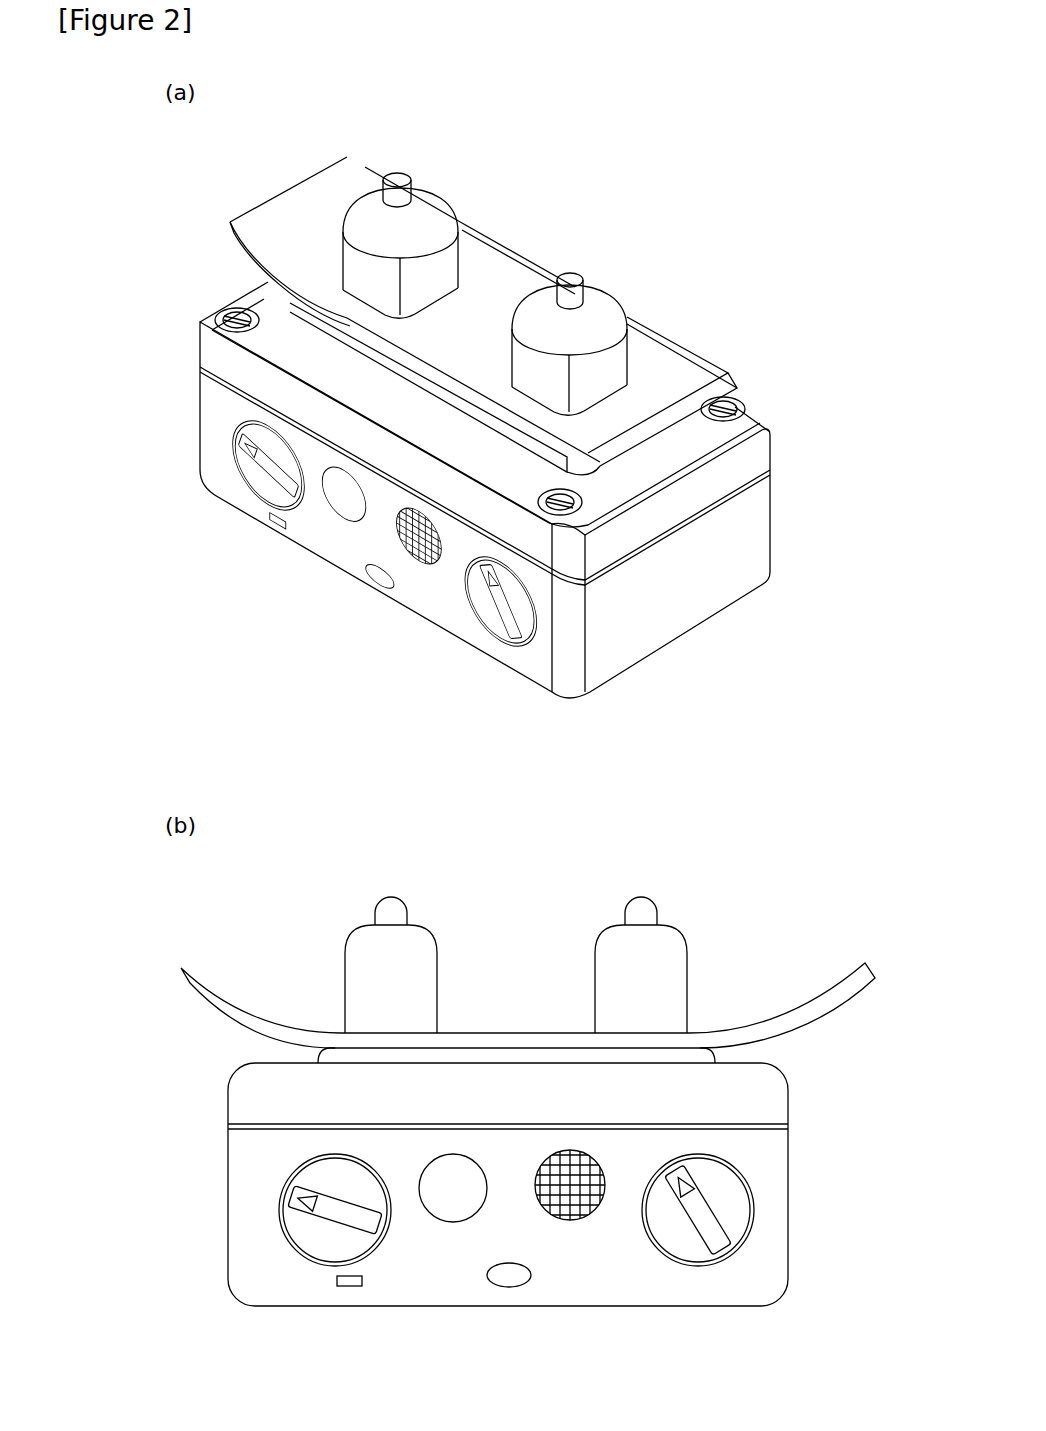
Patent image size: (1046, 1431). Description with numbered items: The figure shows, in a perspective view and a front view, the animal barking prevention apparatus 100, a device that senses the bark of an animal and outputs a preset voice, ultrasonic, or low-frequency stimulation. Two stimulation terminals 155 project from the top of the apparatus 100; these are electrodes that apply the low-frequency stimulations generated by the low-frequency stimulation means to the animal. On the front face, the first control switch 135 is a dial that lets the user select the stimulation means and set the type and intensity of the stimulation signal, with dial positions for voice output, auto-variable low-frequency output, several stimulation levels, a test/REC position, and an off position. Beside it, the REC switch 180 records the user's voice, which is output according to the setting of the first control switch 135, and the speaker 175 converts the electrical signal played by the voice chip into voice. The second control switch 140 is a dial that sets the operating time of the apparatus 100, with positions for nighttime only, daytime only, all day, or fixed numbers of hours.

In FIG. 2a, the animal barking prevention apparatus 100 is at (236, 153).
In FIG. 2b, the animal barking prevention apparatus 100 is at (238, 885).
In FIG. 2a, the stimulation terminals 155 is at (432, 213).
In FIG. 2b, the stimulation terminals 155 is at (413, 948).
In FIG. 2a, the first control switch 135 is at (260, 483).
In FIG. 2b, the first control switch 135 is at (309, 1237).
In FIG. 2a, the recording (REC) switch 180 is at (343, 510).
In FIG. 2b, the recording (REC) switch 180 is at (453, 1208).
In FIG. 2a, the speaker 175 is at (420, 560).
In FIG. 2b, the speaker 175 is at (567, 1205).
In FIG. 2a, the second control switch 140 is at (483, 605).
In FIG. 2b, the second control switch 140 is at (680, 1240).